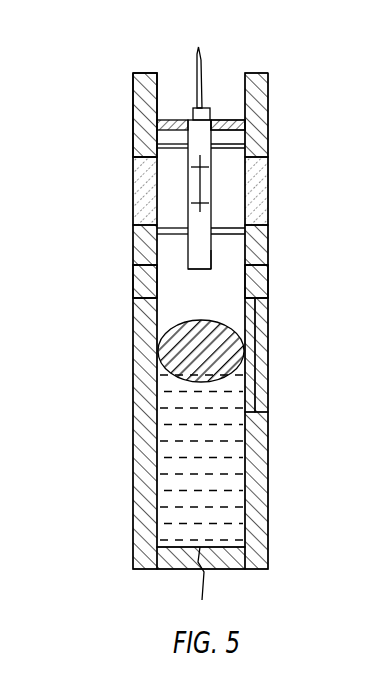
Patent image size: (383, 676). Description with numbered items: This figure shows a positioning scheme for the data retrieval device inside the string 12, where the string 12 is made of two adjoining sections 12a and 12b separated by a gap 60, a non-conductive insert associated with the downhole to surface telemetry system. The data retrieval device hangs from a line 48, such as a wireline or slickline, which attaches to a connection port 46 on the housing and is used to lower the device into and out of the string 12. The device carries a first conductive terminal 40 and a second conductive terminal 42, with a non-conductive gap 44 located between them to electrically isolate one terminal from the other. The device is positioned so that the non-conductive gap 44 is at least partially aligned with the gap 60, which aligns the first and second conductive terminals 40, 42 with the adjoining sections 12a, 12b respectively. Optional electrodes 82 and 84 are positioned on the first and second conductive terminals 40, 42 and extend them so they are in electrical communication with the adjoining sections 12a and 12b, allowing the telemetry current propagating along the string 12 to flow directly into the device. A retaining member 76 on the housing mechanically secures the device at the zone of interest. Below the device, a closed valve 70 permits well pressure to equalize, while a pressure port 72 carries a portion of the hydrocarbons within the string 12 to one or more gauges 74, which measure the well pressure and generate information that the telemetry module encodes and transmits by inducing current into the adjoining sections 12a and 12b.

The string 12 is at (204, 303).
The adjoining section of the string 12a is at (133, 98).
The adjoining section of the string 12b is at (133, 255).
The first conductive terminal 40 is at (213, 134).
The second conductive terminal 42 is at (213, 254).
The non-conductive gap 44 is at (188, 183).
The connection port 46 is at (210, 108).
The line 48 is at (195, 98).
The gap 60 is at (268, 199).
The closed valve 70 is at (190, 320).
The pressure port 72 is at (260, 380).
The gauges 74 is at (268, 281).
The retaining member 76 is at (228, 120).
The electrode 82 is at (186, 146).
The electrode 84 is at (178, 232).